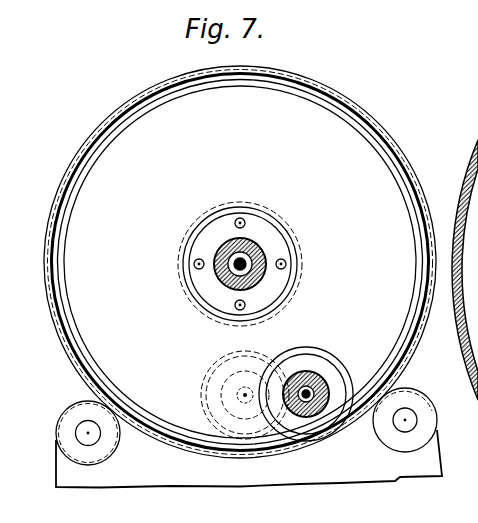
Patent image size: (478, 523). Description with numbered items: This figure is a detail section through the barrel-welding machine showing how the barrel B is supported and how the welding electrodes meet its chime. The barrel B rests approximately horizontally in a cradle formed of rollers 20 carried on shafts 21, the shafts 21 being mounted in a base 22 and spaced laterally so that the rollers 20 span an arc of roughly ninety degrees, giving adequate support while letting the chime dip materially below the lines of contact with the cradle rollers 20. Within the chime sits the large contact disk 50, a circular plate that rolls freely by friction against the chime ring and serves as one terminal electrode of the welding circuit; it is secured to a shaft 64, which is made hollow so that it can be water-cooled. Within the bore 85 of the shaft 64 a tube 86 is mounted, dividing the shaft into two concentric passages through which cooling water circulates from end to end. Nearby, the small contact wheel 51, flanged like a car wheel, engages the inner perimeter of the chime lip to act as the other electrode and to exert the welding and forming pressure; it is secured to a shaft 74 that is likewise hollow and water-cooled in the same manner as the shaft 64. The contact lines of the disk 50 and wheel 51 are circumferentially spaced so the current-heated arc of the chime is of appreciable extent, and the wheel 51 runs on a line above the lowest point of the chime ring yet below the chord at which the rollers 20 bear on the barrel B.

The barrel B is at (243, 262).
The contact disk 50 is at (380, 176).
The bore 85 is at (254, 262).
The shaft 64 is at (258, 256).
The tube 86 is at (245, 258).
The contact wheel 51 is at (338, 382).
The shaft 74 is at (313, 375).
The rollers 20 is at (120, 440).
The shafts 21 is at (88, 433).
The base 22 is at (428, 462).